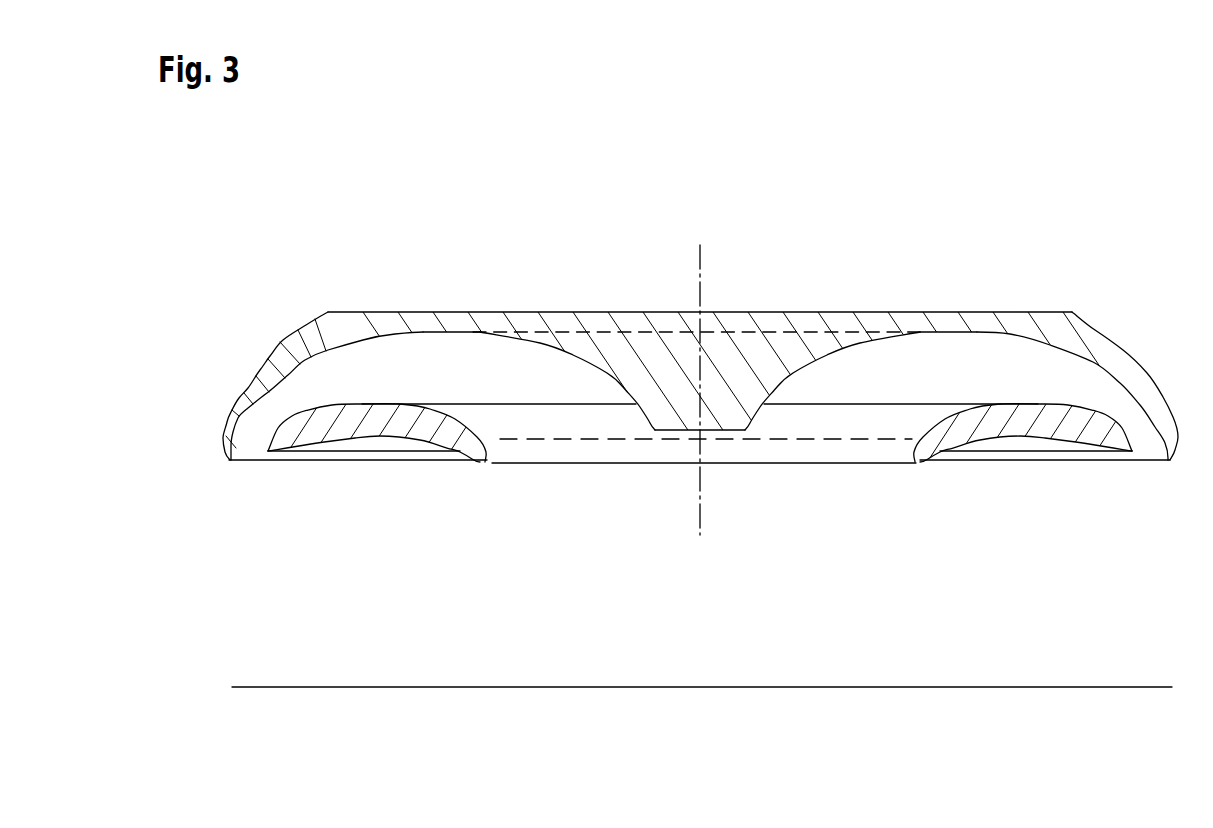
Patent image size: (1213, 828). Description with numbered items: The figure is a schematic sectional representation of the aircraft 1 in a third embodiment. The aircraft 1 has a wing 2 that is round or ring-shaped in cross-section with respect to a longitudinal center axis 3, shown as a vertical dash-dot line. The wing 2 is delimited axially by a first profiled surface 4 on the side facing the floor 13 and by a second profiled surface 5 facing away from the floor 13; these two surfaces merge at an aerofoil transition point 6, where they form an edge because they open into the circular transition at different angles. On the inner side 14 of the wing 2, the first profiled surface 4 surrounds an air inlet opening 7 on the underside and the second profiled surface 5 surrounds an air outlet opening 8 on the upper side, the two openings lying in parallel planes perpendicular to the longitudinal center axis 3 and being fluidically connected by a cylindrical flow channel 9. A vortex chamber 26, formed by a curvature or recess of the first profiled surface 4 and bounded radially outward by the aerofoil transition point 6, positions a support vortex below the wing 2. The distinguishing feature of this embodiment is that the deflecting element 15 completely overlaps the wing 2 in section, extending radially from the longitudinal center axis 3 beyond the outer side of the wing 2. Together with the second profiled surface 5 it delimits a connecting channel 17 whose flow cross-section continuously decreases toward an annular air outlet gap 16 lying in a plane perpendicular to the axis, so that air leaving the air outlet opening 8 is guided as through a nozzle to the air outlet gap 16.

The aircraft 1 is at (948, 227).
The wing 2 is at (447, 389).
The longitudinal center axis 3 is at (704, 519).
The first profiled surface 4 is at (397, 440).
The second profiled surface 5 is at (360, 403).
The aerofoil transition point 6 is at (266, 455).
The air inlet opening 7 is at (620, 466).
The air outlet opening 8 is at (557, 403).
The flow channel 9 is at (803, 454).
The floor 13 is at (947, 686).
The inner side 14 is at (487, 462).
The deflecting element 15 is at (1085, 305).
The air outlet gap 16 is at (247, 448).
The connecting channel 17 is at (387, 373).
The vortex chamber 26 is at (342, 465).